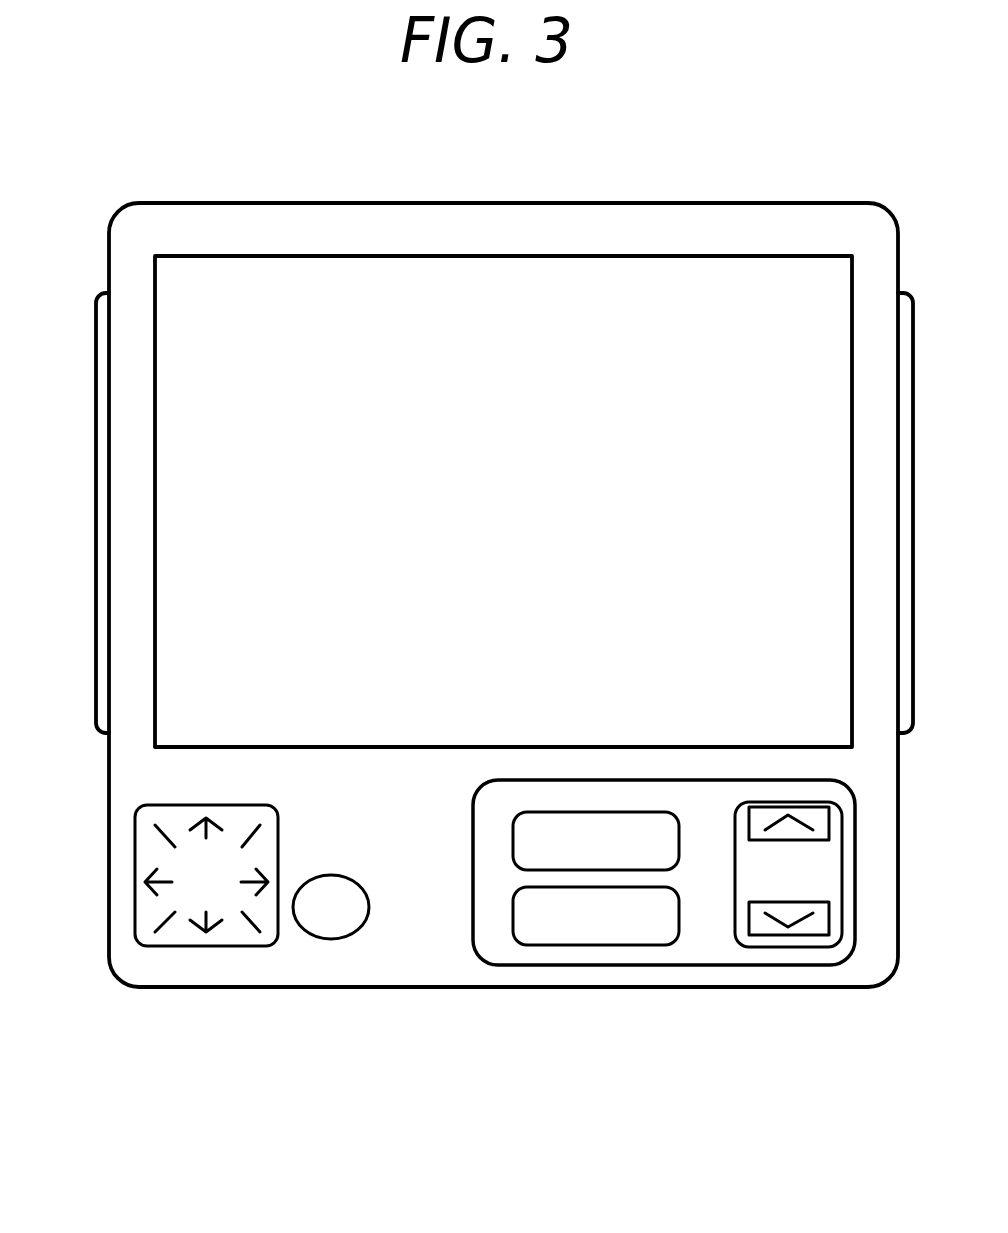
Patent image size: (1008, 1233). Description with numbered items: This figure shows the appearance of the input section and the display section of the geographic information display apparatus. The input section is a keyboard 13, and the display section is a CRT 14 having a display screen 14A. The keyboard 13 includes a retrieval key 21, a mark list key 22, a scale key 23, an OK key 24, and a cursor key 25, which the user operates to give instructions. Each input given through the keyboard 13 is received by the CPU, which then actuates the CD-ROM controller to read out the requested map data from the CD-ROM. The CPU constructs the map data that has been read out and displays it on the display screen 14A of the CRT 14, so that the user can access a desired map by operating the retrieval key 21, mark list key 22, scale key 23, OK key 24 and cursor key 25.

The keyboard 13 is at (100, 859).
The CRT 14 is at (82, 414).
The display screen 14A is at (788, 285).
The retrieval key 21 is at (513, 857).
The mark list key 22 is at (573, 945).
The scale key 23 is at (763, 947).
The OK key 24 is at (323, 939).
The cursor key 25 is at (180, 946).